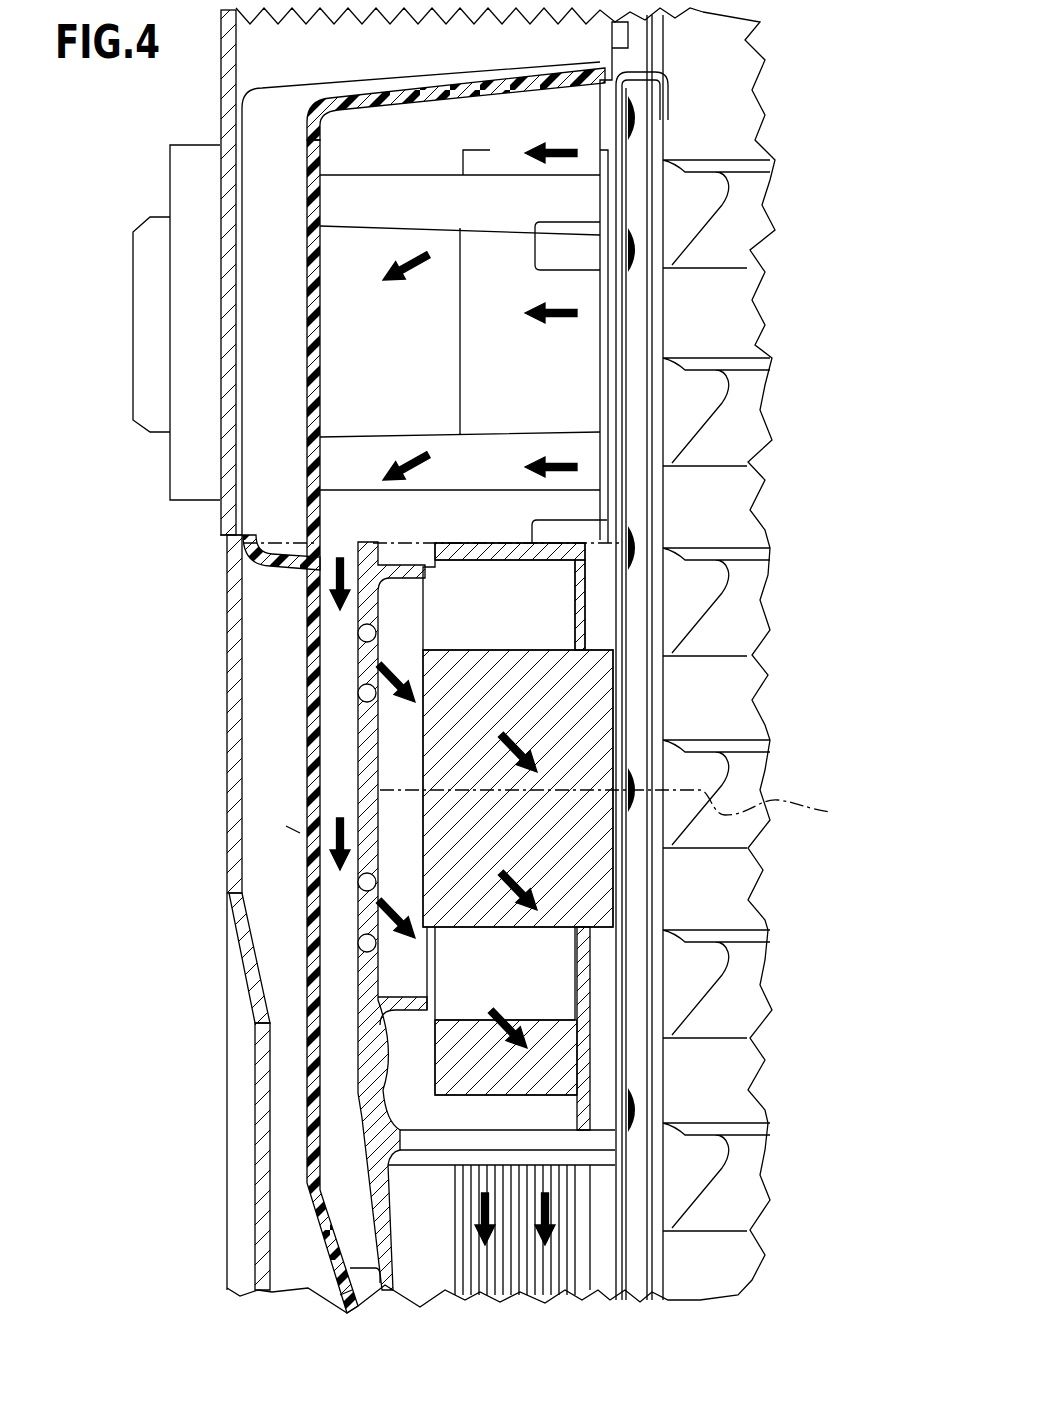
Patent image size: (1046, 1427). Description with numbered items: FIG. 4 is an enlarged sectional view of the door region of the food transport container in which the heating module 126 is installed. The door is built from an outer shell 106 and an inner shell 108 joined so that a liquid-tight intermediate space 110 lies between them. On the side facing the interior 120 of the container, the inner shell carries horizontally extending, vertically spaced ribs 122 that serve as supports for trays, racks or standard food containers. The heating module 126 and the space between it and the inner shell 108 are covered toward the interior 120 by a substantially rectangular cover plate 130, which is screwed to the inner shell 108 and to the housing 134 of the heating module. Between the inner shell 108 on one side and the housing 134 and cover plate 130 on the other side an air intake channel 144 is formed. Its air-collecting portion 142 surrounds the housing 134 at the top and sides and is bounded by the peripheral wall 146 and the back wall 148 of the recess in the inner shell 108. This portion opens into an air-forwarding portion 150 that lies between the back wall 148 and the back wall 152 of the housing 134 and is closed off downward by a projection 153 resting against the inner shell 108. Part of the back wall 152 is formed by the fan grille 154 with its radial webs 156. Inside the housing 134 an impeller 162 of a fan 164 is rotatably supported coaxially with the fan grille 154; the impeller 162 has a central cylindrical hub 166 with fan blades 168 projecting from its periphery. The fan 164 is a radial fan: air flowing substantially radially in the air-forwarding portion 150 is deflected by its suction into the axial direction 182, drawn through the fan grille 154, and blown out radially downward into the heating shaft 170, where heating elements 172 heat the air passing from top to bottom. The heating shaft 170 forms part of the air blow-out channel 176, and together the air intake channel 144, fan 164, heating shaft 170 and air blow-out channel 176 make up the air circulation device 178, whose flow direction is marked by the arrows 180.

The outer shell 106 is at (267, 1147).
The inner shell 108 is at (315, 1208).
The intermediate space 110 is at (278, 608).
The interior 120 is at (723, 1080).
The ribs 122 is at (702, 210).
The heating module 126 is at (632, 995).
The cover plate 130 is at (633, 308).
The housing 134 is at (367, 1023).
The air-collecting portion 142 is at (350, 263).
The air intake channel 144 is at (338, 647).
The peripheral wall 146 is at (400, 95).
The back wall 148 is at (308, 358).
The air-forwarding portion 150 is at (343, 683).
The back wall 152 is at (368, 1077).
The projection 153 is at (355, 1272).
The fan grille 154 is at (365, 948).
The radial webs 156 is at (340, 917).
The impeller 162 is at (588, 880).
The fan 164 is at (410, 740).
The hub 166 is at (590, 727).
The fan blades 168 is at (514, 553).
The heating shaft 170 is at (444, 1210).
The heating elements 172 is at (473, 1273).
The air blow-out channel 176 is at (600, 1256).
The air circulation device 178 is at (300, 833).
The arrows 180 is at (563, 146).
The axial direction 182 is at (623, 810).